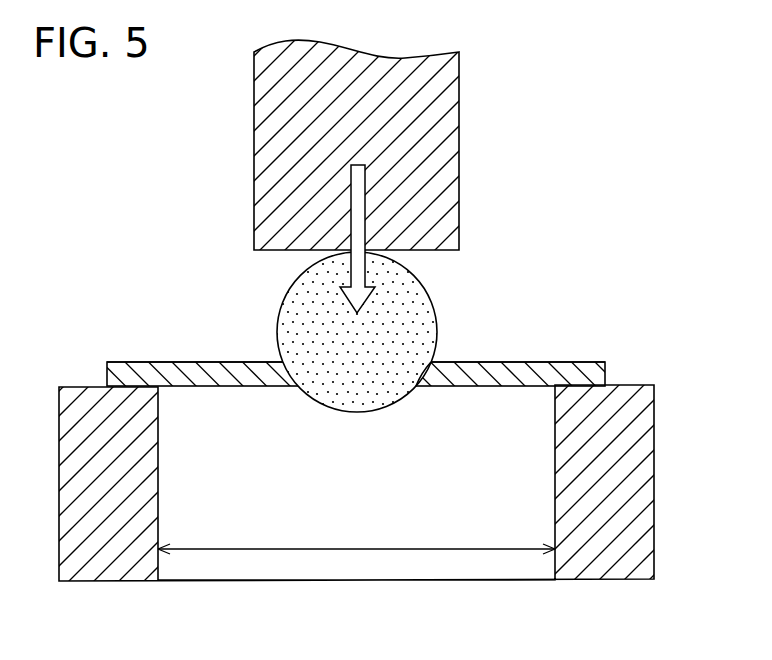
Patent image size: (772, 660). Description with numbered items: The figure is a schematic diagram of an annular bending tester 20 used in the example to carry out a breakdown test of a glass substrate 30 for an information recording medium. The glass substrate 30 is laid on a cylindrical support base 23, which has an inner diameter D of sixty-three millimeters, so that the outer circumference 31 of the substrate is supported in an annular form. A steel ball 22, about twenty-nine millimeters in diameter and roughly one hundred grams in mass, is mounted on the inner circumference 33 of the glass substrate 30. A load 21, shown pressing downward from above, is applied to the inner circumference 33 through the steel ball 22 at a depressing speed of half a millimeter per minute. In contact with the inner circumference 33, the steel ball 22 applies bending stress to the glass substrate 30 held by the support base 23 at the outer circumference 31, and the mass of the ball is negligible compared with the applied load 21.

The annular bending tester 20 is at (603, 180).
The load 21 is at (440, 147).
The steel ball 22 is at (413, 303).
The support base 23 is at (633, 484).
The glass substrate 30 is at (520, 372).
The outer circumference 31 is at (582, 372).
The inner circumference 33 is at (431, 387).